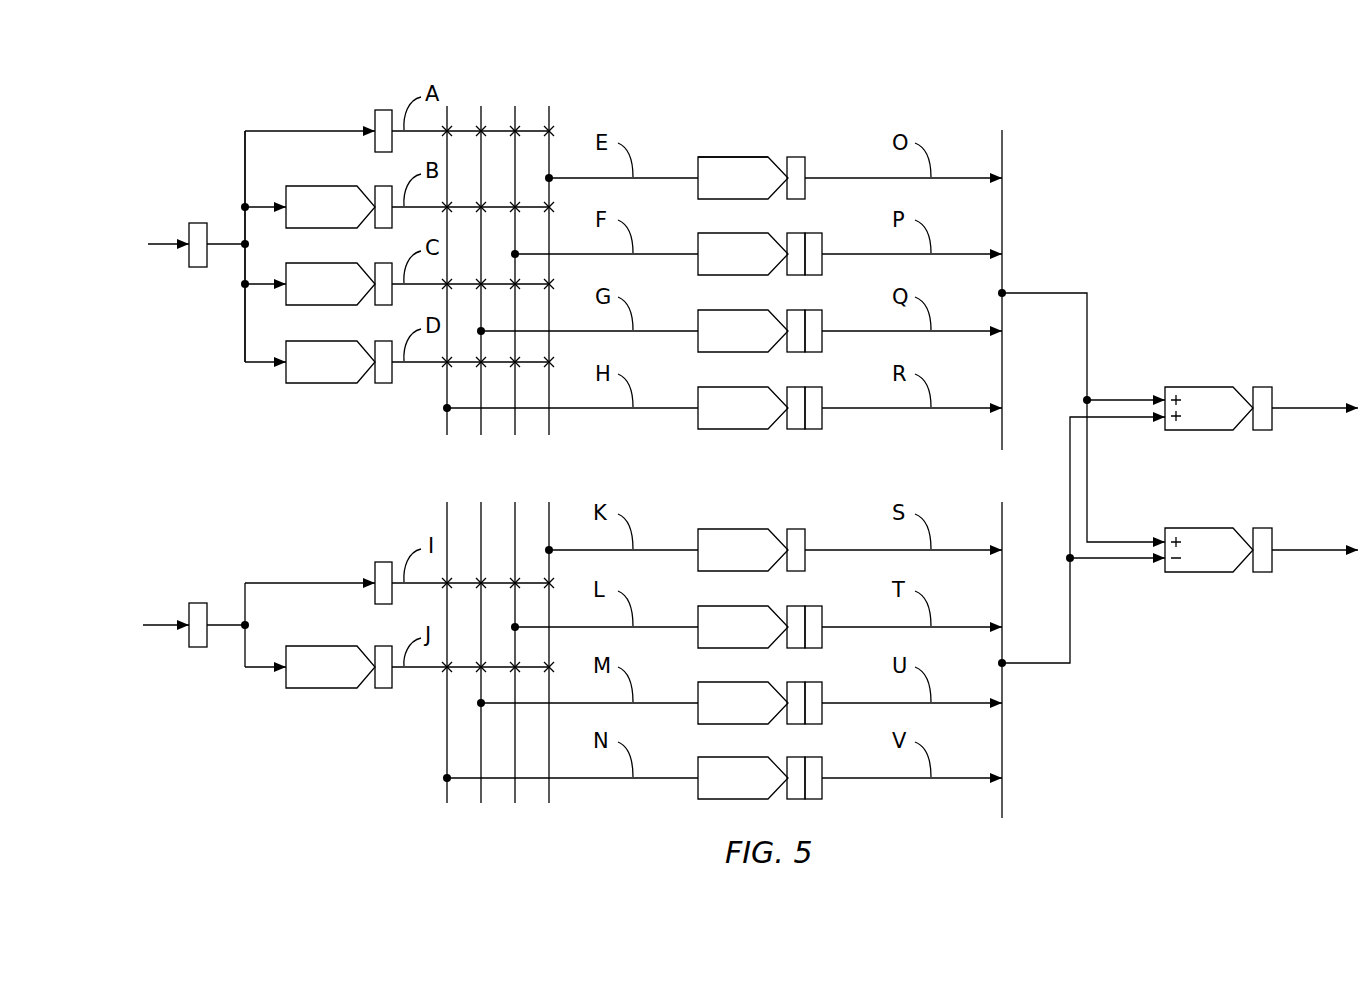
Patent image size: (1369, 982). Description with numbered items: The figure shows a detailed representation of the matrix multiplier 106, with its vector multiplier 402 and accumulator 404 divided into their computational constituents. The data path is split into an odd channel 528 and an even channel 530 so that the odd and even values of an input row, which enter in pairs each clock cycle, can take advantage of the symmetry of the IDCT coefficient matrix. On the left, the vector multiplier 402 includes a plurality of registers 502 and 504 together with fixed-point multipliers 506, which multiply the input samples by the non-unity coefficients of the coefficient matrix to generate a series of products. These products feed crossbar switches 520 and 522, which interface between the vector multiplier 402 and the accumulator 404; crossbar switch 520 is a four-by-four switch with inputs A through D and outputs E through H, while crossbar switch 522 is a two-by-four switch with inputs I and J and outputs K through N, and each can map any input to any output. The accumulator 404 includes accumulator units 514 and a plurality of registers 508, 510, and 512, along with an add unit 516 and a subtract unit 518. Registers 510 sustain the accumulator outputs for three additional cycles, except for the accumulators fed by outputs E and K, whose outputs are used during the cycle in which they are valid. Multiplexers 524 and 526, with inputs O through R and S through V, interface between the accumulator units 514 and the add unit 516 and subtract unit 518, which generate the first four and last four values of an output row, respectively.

The matrix multiplier 106 is at (262, 82).
The vector multiplier 402 is at (338, 110).
The accumulator 404 is at (720, 112).
The registers 502 is at (197, 223).
The registers 504 is at (385, 109).
The fixed-point multipliers 506 is at (322, 186).
The registers 508 is at (796, 157).
The registers 510 is at (813, 233).
The registers 512 is at (1265, 387).
The accumulator units 514 is at (738, 157).
The add unit 516 is at (1203, 387).
The subtract unit 518 is at (1203, 528).
The crossbar switch 520 is at (497, 450).
The crossbar switch 522 is at (497, 490).
The multiplexer 524 is at (1002, 152).
The multiplexer 526 is at (1002, 525).
The odd channel 528 is at (228, 138).
The even channel 530 is at (228, 580).